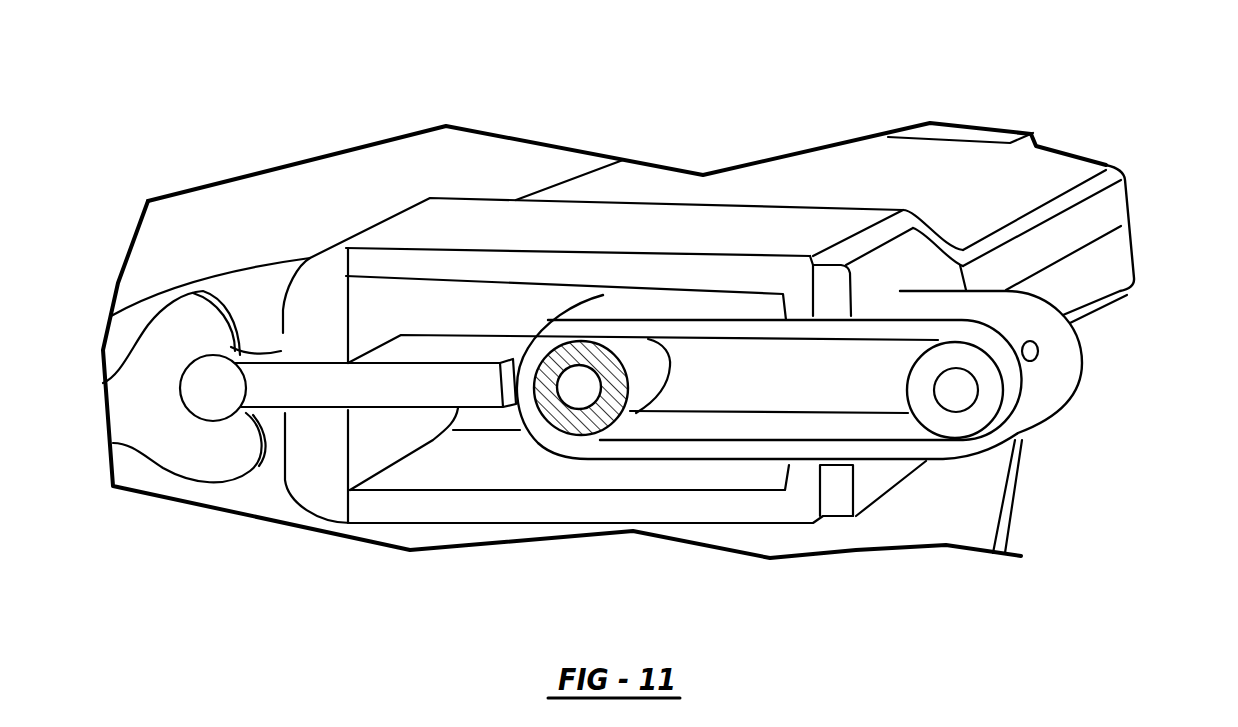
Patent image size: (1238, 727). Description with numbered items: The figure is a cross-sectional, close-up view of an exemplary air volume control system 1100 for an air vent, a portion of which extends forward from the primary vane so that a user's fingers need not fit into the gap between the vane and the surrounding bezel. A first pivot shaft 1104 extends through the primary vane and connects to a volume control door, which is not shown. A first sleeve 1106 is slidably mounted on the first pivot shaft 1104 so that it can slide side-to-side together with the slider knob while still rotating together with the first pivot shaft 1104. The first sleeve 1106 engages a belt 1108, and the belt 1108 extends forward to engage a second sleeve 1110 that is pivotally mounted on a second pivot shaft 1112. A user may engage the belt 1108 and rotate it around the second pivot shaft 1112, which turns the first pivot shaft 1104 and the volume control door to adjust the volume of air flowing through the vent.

The air volume control system 1100 is at (857, 113).
The first pivot shaft 1104 is at (567, 380).
The first sleeve 1106 is at (585, 347).
The belt 1108 is at (890, 452).
The second sleeve 1110 is at (973, 422).
The second pivot shaft 1112 is at (958, 383).